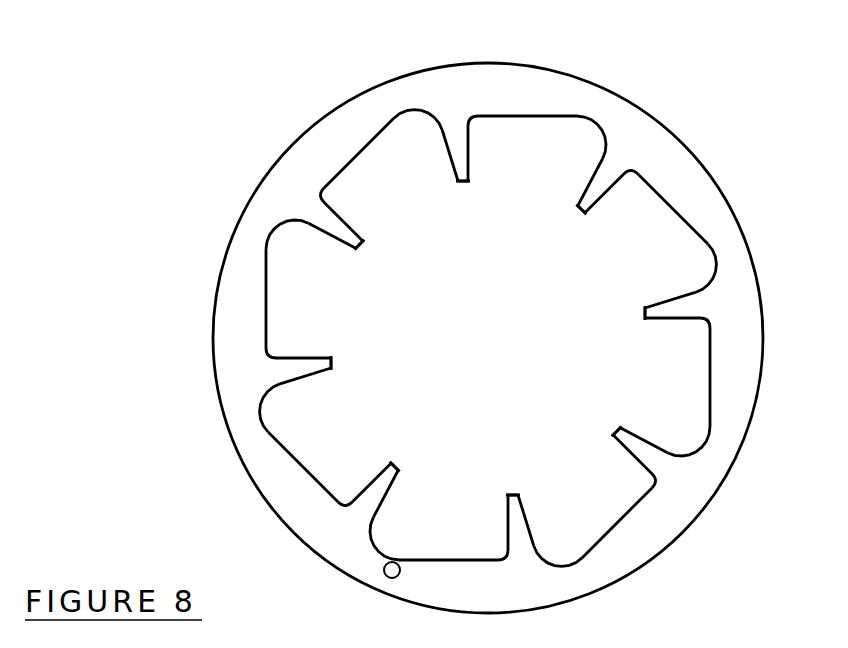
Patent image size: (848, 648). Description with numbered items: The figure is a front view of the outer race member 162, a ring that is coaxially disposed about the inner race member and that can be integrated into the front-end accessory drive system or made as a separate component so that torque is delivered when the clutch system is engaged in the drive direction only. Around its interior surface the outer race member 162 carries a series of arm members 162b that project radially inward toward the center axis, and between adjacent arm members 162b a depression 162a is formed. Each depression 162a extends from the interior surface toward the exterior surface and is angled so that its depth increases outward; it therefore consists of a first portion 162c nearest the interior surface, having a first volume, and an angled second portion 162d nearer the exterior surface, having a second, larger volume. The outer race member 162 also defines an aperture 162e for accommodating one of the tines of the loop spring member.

The outer race member 162 is at (270, 110).
The depression 162a is at (350, 140).
The arm members 162b is at (445, 103).
The first portion 162c is at (468, 165).
The angled second portion 162d is at (420, 108).
The aperture 162e is at (383, 571).